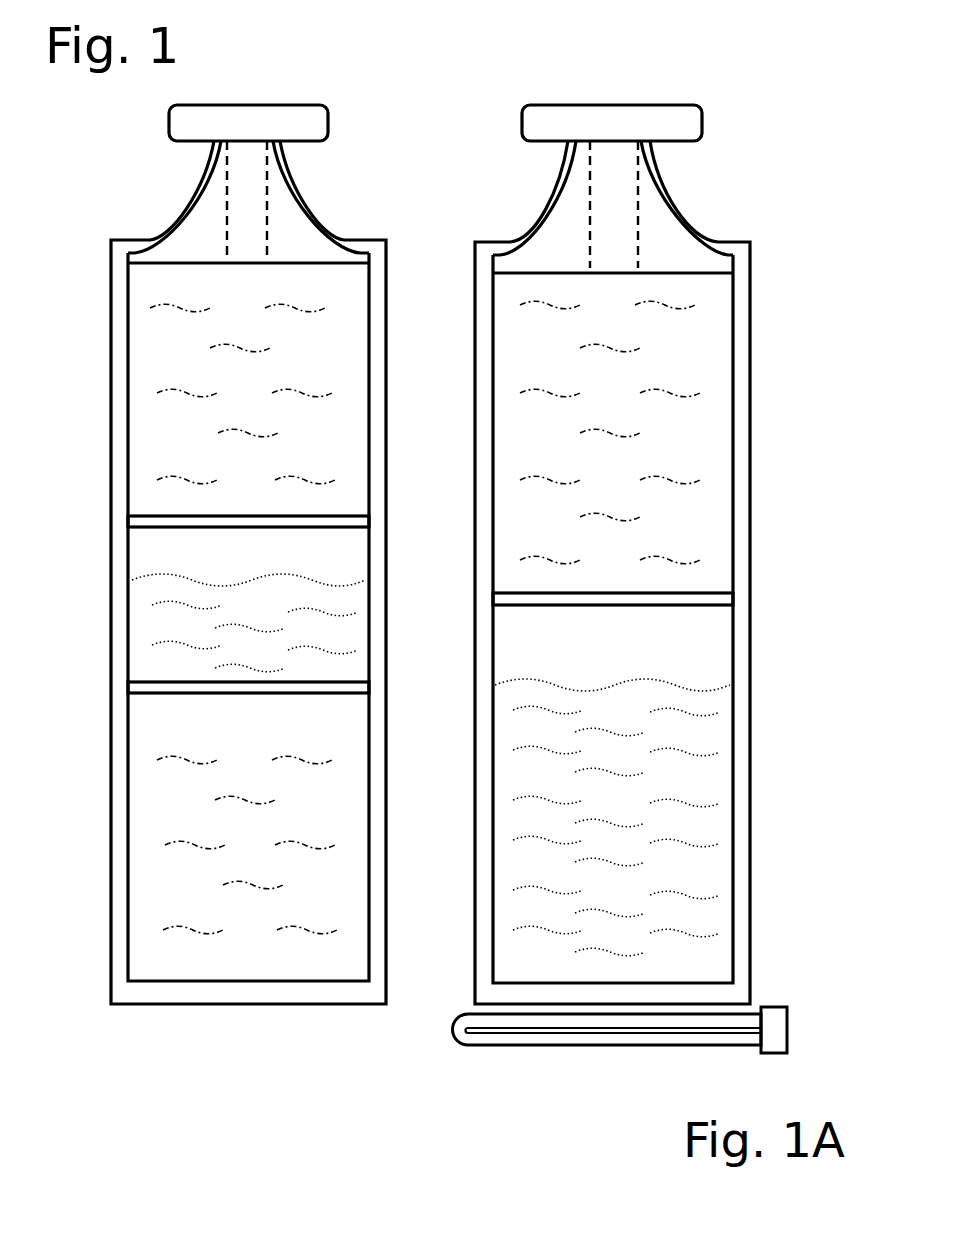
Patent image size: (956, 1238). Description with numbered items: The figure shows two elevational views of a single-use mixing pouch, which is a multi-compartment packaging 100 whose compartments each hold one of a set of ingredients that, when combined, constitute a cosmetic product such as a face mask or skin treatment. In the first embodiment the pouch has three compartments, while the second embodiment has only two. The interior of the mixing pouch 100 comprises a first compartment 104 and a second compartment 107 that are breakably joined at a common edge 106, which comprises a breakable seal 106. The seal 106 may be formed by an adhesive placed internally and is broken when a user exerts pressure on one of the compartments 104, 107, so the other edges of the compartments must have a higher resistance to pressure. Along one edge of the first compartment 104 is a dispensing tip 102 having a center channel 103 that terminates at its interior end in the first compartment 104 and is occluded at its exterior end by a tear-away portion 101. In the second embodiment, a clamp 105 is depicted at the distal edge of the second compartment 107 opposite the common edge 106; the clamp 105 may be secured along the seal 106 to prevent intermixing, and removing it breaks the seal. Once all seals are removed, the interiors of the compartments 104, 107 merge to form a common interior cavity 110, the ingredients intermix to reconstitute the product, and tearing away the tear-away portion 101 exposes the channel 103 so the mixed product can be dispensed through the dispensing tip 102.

In FIG. 1, the multi-compartment packaging 100 is at (300, 91).
In FIG. 1A, the multi-compartment packaging 100 is at (600, 91).
In FIG. 1, the tear-away portion 101 is at (170, 118).
In FIG. 1A, the tear-away portion 101 is at (690, 121).
In FIG. 1, the dispensing tip 102 is at (247, 198).
In FIG. 1A, the dispensing tip 102 is at (618, 169).
In FIG. 1, the center channel 103 is at (187, 241).
In FIG. 1A, the center channel 103 is at (652, 225).
In FIG. 1, the first compartment 104 is at (166, 411).
In FIG. 1A, the first compartment 104 is at (684, 424).
In FIG. 1A, the clamp 105 is at (520, 1046).
In FIG. 1, the breakable seal 106 is at (183, 518).
In FIG. 1A, the breakable seal 106 is at (677, 600).
In FIG. 1, the second compartment 107 is at (190, 790).
In FIG. 1A, the second compartment 107 is at (690, 820).
In FIG. 1, the common interior cavity 110 is at (240, 956).
In FIG. 1A, the common interior cavity 110 is at (686, 363).